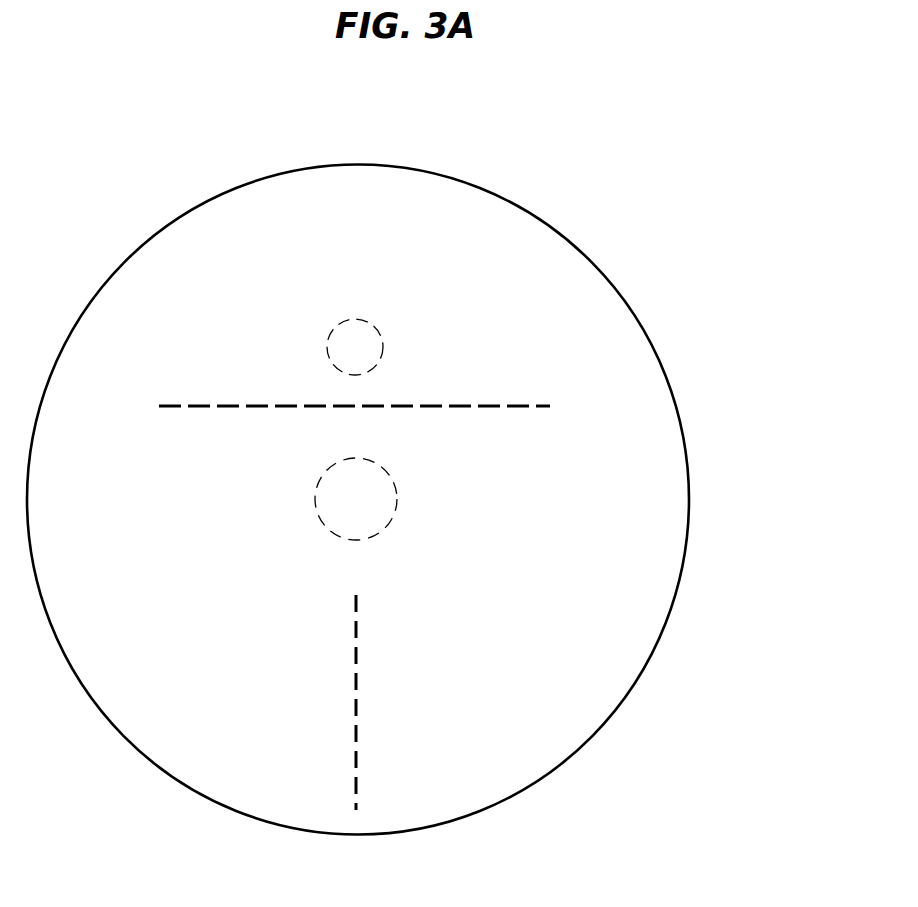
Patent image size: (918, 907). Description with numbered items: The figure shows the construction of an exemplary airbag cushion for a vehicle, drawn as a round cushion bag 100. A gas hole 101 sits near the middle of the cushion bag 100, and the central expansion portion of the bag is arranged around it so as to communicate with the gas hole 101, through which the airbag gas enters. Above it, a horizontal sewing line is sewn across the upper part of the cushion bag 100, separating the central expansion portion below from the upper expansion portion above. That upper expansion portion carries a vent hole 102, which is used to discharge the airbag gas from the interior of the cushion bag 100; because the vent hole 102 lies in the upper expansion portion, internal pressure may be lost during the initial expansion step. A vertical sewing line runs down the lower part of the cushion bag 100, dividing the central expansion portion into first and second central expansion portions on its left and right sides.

The cushion bag 100 is at (413, 143).
The gas hole 101 is at (368, 507).
The vent hole 102 is at (354, 347).